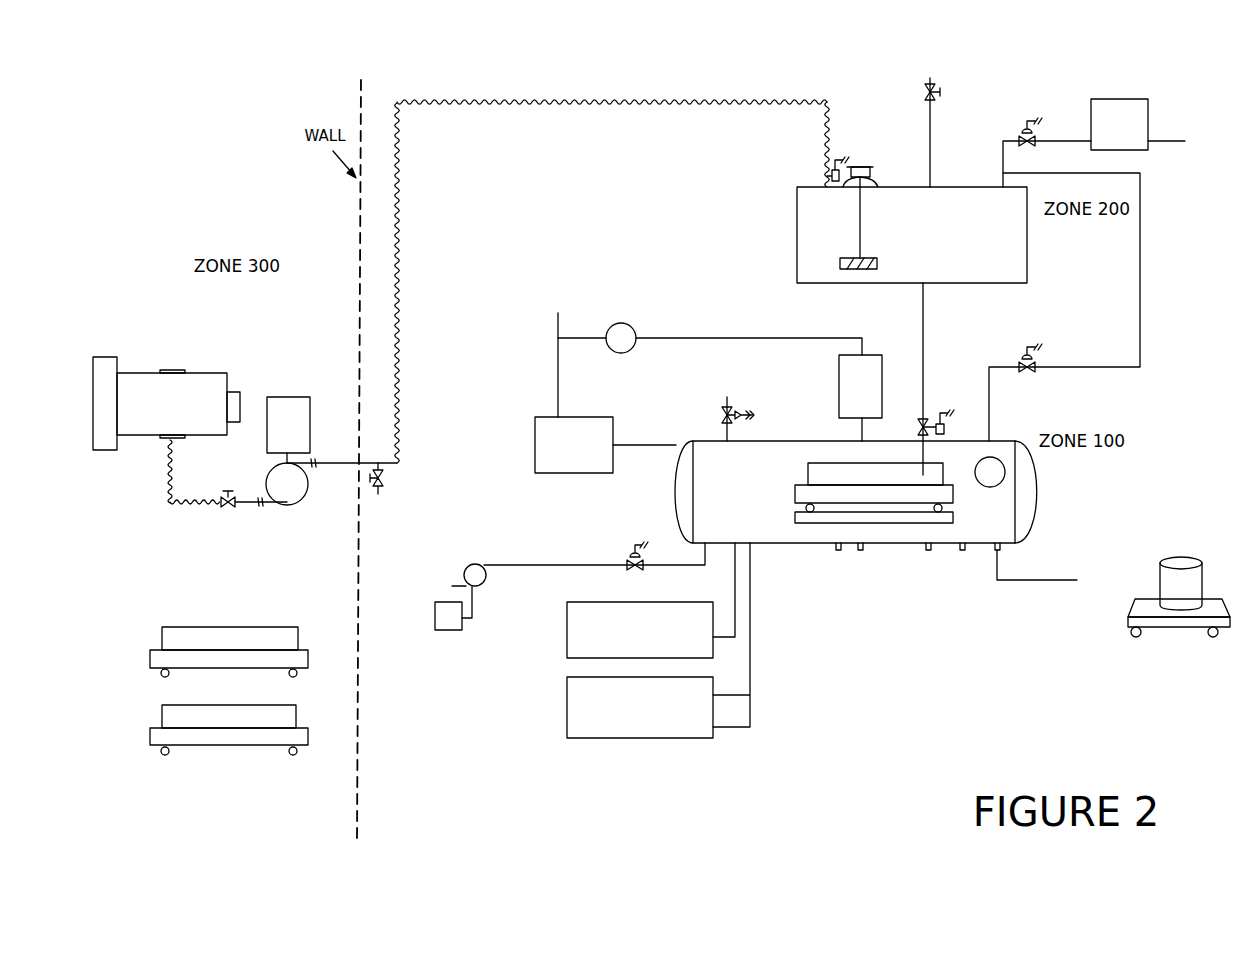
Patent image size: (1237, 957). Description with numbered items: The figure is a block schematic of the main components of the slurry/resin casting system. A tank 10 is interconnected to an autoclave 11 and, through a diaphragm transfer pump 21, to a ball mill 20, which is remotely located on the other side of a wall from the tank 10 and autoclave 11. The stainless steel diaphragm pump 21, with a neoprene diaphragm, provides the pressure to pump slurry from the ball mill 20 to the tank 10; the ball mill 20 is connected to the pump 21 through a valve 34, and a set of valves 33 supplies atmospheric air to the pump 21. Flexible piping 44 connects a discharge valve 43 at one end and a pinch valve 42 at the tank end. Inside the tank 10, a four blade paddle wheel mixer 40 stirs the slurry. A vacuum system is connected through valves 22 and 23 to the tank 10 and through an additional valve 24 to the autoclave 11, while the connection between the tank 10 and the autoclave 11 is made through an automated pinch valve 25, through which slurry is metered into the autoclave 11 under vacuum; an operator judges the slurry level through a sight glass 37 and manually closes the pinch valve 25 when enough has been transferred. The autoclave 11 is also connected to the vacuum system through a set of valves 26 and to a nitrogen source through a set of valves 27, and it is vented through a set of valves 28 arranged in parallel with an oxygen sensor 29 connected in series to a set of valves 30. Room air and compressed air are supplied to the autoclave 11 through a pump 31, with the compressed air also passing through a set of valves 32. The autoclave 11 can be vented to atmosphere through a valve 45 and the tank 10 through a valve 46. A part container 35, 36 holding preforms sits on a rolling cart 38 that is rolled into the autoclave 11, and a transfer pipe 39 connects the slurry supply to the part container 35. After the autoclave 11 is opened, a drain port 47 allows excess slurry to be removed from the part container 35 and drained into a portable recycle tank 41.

The tank 10 is at (797, 237).
The autoclave 11 is at (895, 545).
The ball mill 20 is at (213, 373).
The diaphragm transfer pump 21 is at (300, 505).
The valve 22 is at (1135, 99).
The valve 23 is at (1023, 135).
The valve 24 is at (1030, 375).
The pinch valve 25 is at (925, 420).
The set of valves 26 is at (567, 633).
The set of valves 27 is at (567, 716).
The set of valves 28 is at (535, 434).
The oxygen sensor 29 is at (632, 327).
The set of valves 30 is at (870, 355).
The pump 31 is at (478, 565).
The set of valves 32 is at (440, 632).
The set of valves 33 is at (291, 397).
The valve 34 is at (228, 510).
The part container 35 is at (808, 470).
The part container 36 is at (162, 640).
The sight glass 37 is at (1005, 471).
The rolling cart 38 is at (795, 495).
The transfer pipe 39 is at (920, 470).
The paddle wheel mixer 40 is at (857, 270).
The portable recycle tank 41 is at (1197, 562).
The pinch valve 42 is at (823, 177).
The discharge valve 43 is at (387, 480).
The flexible piping 44 is at (400, 256).
The valve 45 is at (742, 403).
The valve 46 is at (941, 92).
The drain port 47 is at (992, 556).